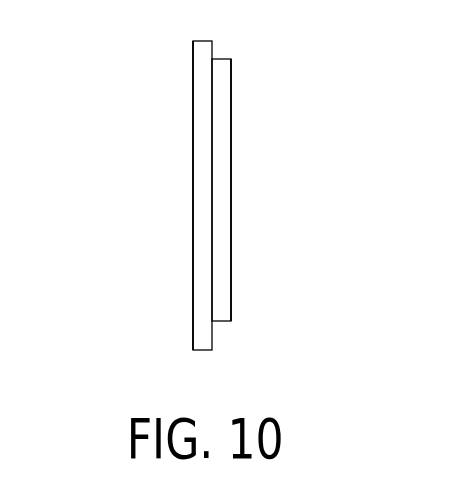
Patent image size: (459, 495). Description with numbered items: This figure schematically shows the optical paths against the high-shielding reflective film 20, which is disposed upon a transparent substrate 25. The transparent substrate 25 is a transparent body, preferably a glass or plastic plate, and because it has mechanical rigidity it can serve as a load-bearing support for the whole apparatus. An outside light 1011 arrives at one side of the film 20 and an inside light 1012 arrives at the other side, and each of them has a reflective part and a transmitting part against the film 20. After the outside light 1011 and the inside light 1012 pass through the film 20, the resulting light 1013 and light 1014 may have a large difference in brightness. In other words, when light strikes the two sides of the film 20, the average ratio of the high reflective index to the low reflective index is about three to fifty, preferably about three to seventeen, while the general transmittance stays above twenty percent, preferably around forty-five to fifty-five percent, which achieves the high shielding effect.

The high-shielding reflective film 20 is at (220, 73).
The transparent substrate 25 is at (199, 339).
The outside light 1011 is at (178, 180).
The inside light 1012 is at (241, 175).
The light 1013 is at (188, 195).
The light 1014 is at (236, 195).